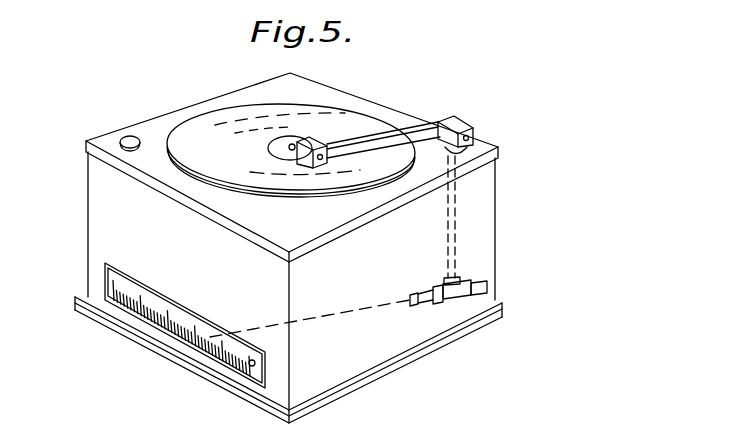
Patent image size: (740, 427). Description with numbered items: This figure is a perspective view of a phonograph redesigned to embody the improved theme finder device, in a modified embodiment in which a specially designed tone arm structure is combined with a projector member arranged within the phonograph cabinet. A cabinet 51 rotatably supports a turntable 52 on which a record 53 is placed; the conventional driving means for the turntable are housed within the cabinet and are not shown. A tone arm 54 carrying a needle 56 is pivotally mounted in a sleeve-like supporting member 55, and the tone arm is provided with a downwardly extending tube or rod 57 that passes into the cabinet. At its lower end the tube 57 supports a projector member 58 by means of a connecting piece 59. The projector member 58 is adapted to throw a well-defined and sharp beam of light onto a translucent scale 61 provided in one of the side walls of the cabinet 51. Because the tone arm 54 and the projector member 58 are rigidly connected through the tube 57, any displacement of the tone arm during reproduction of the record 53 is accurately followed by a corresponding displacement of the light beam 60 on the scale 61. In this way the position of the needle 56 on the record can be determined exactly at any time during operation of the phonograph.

The cabinet 51 is at (490, 225).
The turntable 52 is at (259, 193).
The record 53 is at (298, 182).
The tone arm 54 is at (390, 136).
The sleeve-like supporting member 55 is at (473, 135).
The needle 56 is at (283, 152).
The tube or rod 57 is at (452, 252).
The projector member 58 is at (490, 278).
The connecting piece 59 is at (447, 302).
The light beam 60 is at (311, 319).
The translucent scale 61 is at (137, 285).